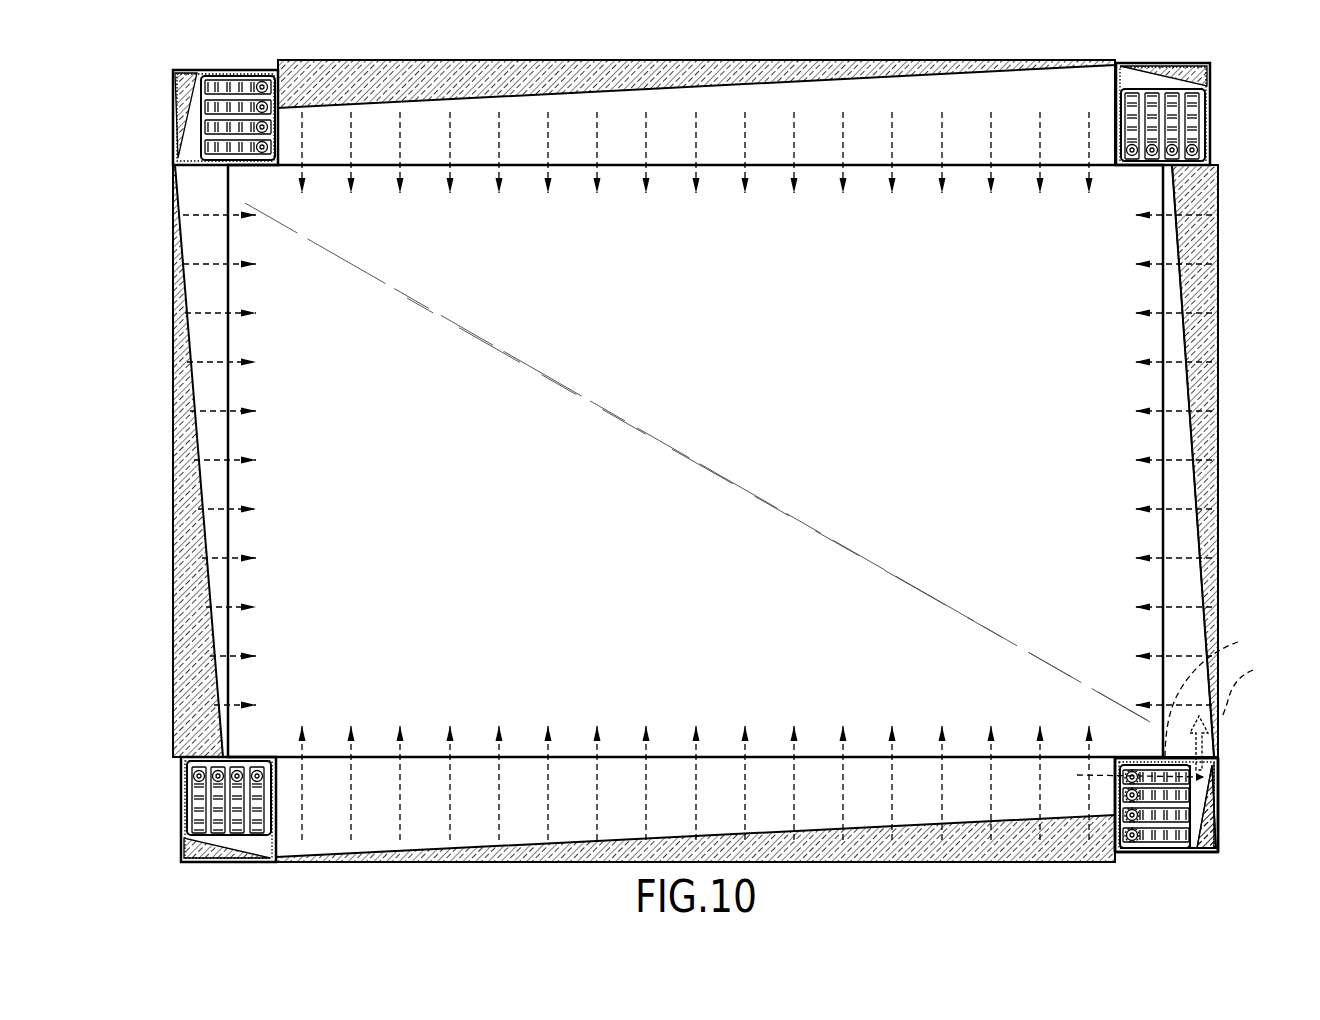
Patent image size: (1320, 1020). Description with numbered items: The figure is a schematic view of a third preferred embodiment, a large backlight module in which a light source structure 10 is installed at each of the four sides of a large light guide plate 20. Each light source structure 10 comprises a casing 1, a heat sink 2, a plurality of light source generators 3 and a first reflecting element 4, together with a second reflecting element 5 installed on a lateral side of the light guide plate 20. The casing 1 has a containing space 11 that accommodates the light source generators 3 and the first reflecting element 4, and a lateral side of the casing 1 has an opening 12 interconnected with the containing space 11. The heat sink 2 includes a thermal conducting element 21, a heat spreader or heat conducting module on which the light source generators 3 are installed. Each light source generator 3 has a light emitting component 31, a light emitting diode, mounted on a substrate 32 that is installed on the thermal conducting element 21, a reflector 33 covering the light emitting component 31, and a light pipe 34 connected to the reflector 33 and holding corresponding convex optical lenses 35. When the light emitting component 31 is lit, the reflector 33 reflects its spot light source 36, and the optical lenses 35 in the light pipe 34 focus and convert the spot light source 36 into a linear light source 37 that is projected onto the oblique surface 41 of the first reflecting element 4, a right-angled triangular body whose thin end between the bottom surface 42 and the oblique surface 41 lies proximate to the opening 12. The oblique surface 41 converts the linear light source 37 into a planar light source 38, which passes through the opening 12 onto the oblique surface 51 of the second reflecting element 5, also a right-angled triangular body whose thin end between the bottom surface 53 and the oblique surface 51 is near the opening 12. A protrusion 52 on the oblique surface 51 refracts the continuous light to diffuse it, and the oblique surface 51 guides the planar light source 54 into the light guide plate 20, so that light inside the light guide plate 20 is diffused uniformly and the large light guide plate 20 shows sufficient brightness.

The casing 1 is at (1208, 777).
The heat sink 2 is at (1181, 856).
The light source generator 3 is at (1164, 855).
The first reflecting element 4 is at (1219, 806).
The second reflecting element 5 is at (1208, 390).
The light source structure 10 is at (1113, 802).
The containing space 11 is at (1200, 763).
The opening 12 is at (1207, 745).
The light guide plate 20 is at (253, 390).
The thermal conducting element 21 is at (1100, 837).
The light emitting component 31 is at (1143, 842).
The substrate 32 is at (1125, 842).
The reflector 33 is at (1113, 823).
The light pipe 34 is at (1188, 853).
The optical lens 35 is at (1188, 858).
The spot light source 36 is at (1123, 775).
The linear light source 37 is at (1216, 693).
The planar light source 38 is at (1252, 686).
The oblique surface 41 is at (1199, 795).
The bottom surface 42 is at (1218, 827).
The oblique surface 51 is at (1183, 475).
The protrusion 52 is at (1193, 428).
The bottom surface 53 is at (1220, 360).
The planar light source 54 is at (1180, 560).